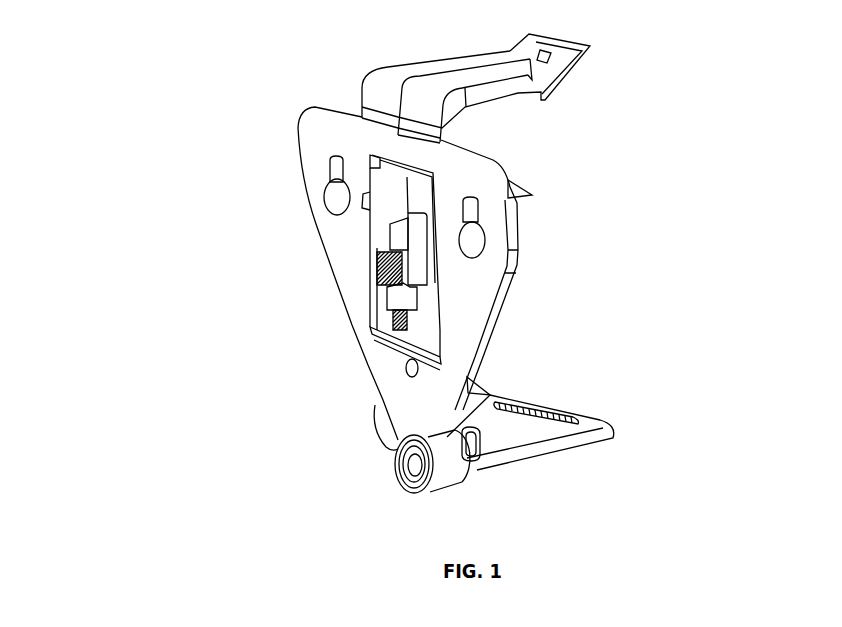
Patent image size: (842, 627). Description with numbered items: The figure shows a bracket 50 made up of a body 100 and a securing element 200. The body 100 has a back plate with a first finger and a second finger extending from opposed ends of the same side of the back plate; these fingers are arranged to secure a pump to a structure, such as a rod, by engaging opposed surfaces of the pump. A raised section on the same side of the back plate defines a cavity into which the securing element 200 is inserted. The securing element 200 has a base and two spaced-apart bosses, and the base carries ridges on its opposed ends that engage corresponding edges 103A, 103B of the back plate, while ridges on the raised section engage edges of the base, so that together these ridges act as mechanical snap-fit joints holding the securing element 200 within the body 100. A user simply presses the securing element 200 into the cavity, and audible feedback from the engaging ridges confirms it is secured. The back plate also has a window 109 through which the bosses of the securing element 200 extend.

The bracket 50 is at (162, 233).
The body 100 is at (600, 420).
The edge of the back plate 103A is at (372, 162).
The edge of the back plate 103B is at (398, 347).
The window 109 is at (389, 339).
The securing element 200 is at (374, 299).